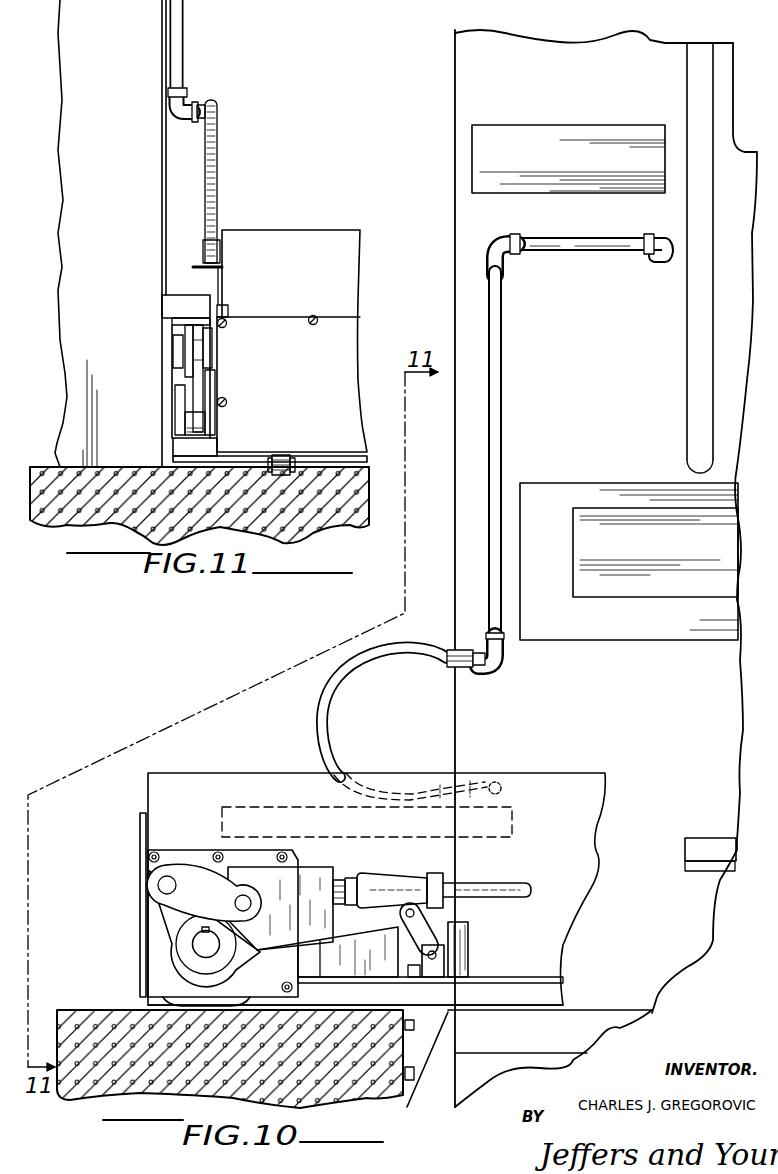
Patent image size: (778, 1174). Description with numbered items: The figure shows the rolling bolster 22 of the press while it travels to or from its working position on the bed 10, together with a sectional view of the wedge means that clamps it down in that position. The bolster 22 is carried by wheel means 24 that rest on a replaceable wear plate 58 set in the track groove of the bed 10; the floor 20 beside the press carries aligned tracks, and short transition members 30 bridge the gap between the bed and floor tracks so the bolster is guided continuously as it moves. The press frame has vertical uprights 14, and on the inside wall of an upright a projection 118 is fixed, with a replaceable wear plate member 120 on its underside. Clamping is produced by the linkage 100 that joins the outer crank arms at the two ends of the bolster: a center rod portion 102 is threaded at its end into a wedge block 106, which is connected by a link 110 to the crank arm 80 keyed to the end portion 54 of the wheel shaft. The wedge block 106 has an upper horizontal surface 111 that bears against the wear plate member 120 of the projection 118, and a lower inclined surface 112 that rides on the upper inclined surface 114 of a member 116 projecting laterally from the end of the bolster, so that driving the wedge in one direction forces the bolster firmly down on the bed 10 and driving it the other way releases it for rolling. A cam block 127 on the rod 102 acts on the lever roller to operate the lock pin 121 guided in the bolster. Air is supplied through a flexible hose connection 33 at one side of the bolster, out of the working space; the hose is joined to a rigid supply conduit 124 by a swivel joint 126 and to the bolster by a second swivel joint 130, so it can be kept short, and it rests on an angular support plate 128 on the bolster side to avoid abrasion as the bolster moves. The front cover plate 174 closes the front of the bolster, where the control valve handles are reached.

In FIG. 10, the bed 10 is at (594, 1015).
In FIG. 11, the vertical uprights 14 is at (58, 265).
In FIG. 10, the vertical uprights 14 is at (738, 470).
In FIG. 10, the floor 20 is at (90, 1009).
In FIG. 11, the bolster 22 is at (308, 229).
In FIG. 10, the bolster 22 is at (556, 773).
In FIG. 11, the wheel means 24 is at (280, 456).
In FIG. 10, the wheel means 24 is at (196, 1002).
In FIG. 10, the transition members 30 is at (423, 1057).
In FIG. 11, the flexible hose connection 33 is at (219, 152).
In FIG. 10, the flexible hose connection 33 is at (334, 720).
In FIG. 10, the end portion 54 is at (196, 944).
In FIG. 11, the wear plate 58 is at (296, 462).
In FIG. 11, the crank arm 80 is at (190, 412).
In FIG. 10, the crank arm 80 is at (160, 912).
In FIG. 10, the linkage 100 is at (531, 893).
In FIG. 10, the center rod portion 102 is at (500, 897).
In FIG. 10, the wedge block 106 is at (272, 880).
In FIG. 11, the link 110 is at (180, 350).
In FIG. 10, the link 110 is at (196, 880).
In FIG. 10, the upper horizontal surface 111 is at (310, 866).
In FIG. 10, the lower inclined surface 112 is at (266, 953).
In FIG. 10, the upper inclined surface 114 is at (372, 928).
In FIG. 10, the member 116 is at (357, 972).
In FIG. 11, the projection 118 is at (166, 298).
In FIG. 10, the projection 118 is at (697, 838).
In FIG. 11, the wear plate member 120 is at (171, 322).
In FIG. 10, the wear plate member 120 is at (685, 866).
In FIG. 10, the lock pin 121 is at (470, 968).
In FIG. 11, the rigid supply conduit 124 is at (185, 38).
In FIG. 10, the rigid supply conduit 124 is at (505, 342).
In FIG. 10, the swivel joint 126 is at (479, 672).
In FIG. 10, the cam block 127 is at (439, 878).
In FIG. 11, the angular support plate 128 is at (194, 262).
In FIG. 10, the angular support plate 128 is at (287, 806).
In FIG. 10, the swivel joint 130 is at (495, 781).
In FIG. 11, the front cover plate 174 is at (359, 341).
In FIG. 10, the front cover plate 174 is at (140, 840).